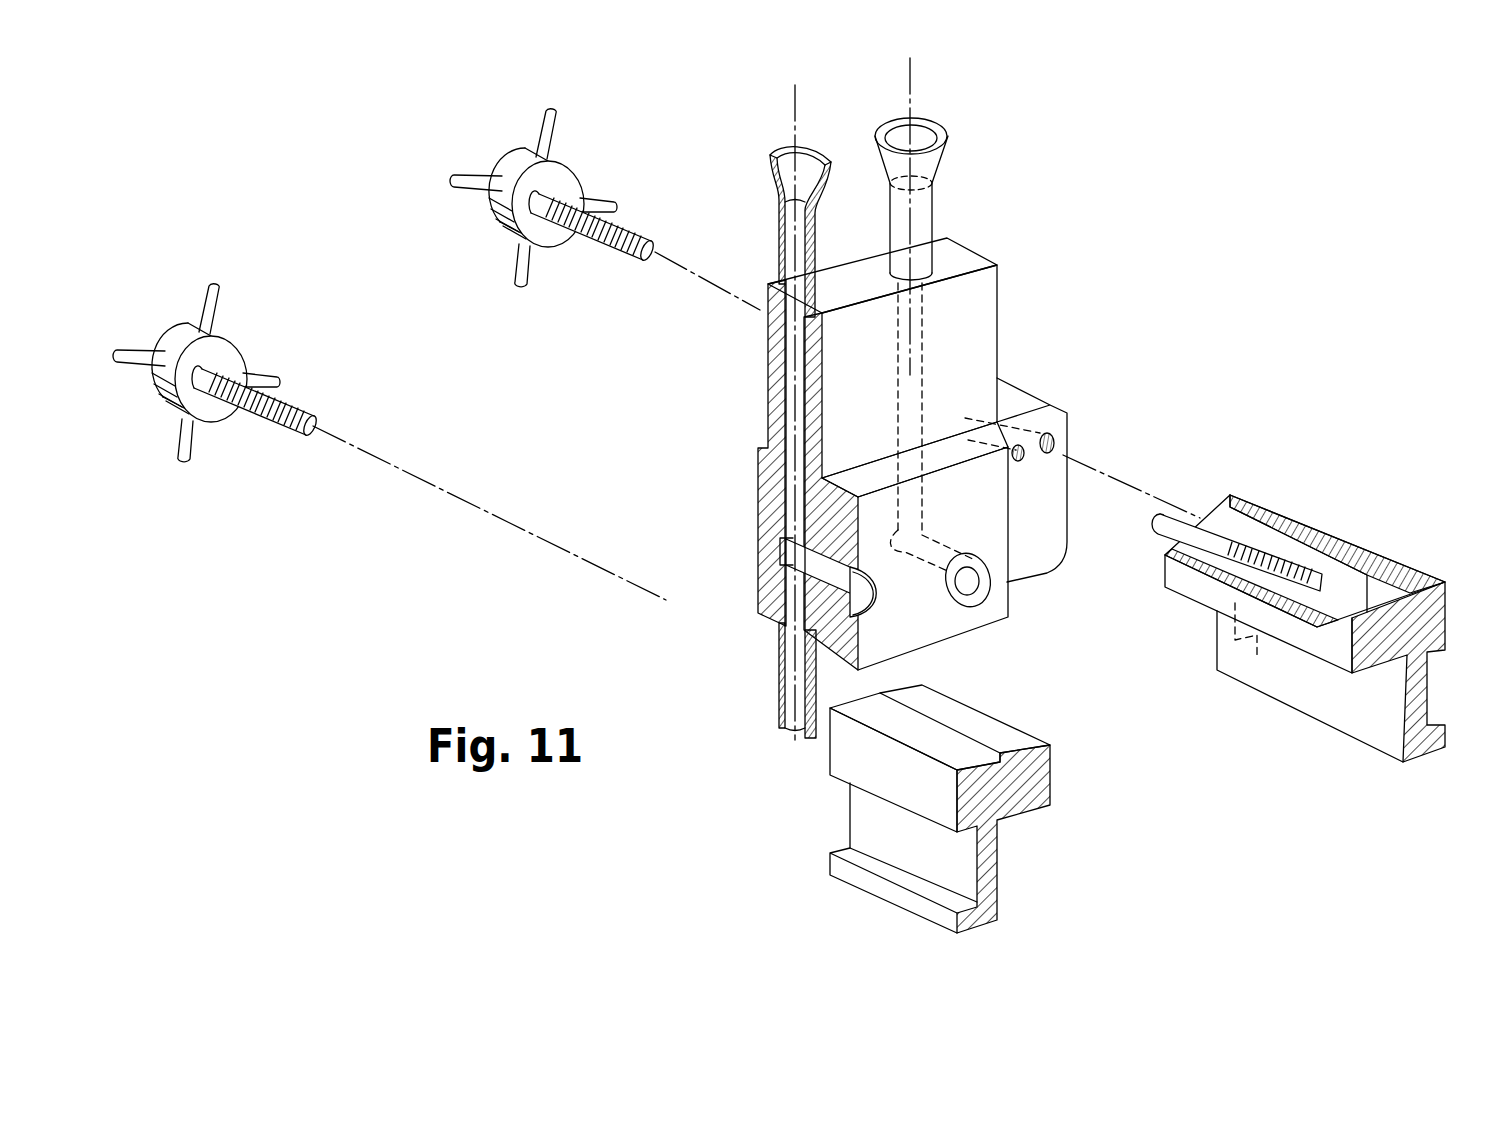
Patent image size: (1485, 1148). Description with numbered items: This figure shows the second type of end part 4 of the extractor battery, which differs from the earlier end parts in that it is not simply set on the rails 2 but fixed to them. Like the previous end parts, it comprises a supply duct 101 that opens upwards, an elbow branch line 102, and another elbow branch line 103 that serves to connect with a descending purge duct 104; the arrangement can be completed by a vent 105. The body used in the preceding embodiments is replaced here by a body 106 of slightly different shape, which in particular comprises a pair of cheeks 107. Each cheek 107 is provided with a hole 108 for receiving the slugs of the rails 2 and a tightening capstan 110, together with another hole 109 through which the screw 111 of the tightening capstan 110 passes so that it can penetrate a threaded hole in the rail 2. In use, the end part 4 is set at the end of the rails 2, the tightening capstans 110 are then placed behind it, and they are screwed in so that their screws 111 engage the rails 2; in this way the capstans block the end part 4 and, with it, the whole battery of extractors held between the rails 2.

The rail 2 is at (1302, 514).
The end part 4 is at (931, 403).
The supply duct 101 is at (917, 368).
The elbow branch line 102 is at (940, 809).
The elbow branch line 103 is at (772, 583).
The descending purge duct 104 is at (777, 668).
The vent 105 is at (790, 404).
The body 106 is at (1064, 562).
The cheek 107 is at (1040, 582).
The hole 108 is at (1012, 460).
The hole 109 is at (1053, 442).
The tightening capstan 110 is at (436, 343).
The screw 111 is at (600, 247).